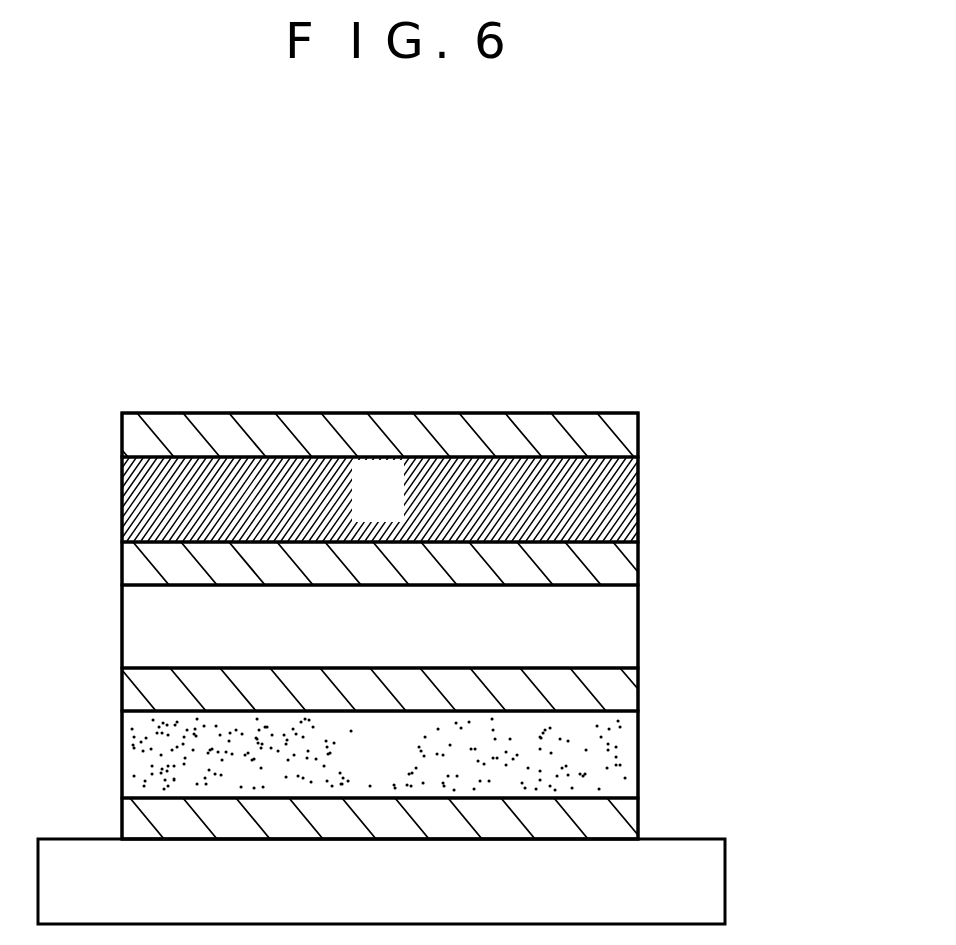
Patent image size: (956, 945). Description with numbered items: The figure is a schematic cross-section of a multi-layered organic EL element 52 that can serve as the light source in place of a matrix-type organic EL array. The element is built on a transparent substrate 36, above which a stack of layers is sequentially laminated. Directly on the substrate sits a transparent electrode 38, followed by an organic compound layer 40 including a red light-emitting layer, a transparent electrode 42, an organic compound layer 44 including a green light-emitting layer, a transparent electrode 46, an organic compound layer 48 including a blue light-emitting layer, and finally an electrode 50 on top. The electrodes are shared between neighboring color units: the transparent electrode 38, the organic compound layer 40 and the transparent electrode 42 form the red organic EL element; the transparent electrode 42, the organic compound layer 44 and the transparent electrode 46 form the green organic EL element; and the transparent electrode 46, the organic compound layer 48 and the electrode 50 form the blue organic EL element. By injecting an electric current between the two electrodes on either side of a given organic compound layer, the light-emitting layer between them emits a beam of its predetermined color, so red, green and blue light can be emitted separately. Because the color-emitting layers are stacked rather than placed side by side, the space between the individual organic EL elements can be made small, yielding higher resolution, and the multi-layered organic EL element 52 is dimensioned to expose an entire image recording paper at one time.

The transparent substrate 36 is at (705, 885).
The transparent electrode 38 is at (630, 811).
The organic compound layer including a red light-emitting layer 40 is at (620, 752).
The transparent electrode 42 is at (624, 690).
The organic compound layer including a green light-emitting layer 44 is at (618, 630).
The transparent electrode 46 is at (628, 567).
The organic compound layer including a blue light-emitting layer 48 is at (637, 497).
The electrode 50 is at (627, 433).
The multi-layered organic EL element 52 is at (621, 377).